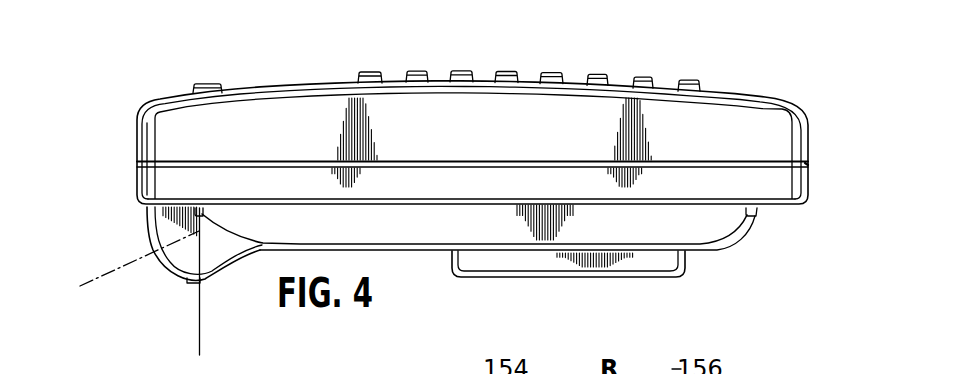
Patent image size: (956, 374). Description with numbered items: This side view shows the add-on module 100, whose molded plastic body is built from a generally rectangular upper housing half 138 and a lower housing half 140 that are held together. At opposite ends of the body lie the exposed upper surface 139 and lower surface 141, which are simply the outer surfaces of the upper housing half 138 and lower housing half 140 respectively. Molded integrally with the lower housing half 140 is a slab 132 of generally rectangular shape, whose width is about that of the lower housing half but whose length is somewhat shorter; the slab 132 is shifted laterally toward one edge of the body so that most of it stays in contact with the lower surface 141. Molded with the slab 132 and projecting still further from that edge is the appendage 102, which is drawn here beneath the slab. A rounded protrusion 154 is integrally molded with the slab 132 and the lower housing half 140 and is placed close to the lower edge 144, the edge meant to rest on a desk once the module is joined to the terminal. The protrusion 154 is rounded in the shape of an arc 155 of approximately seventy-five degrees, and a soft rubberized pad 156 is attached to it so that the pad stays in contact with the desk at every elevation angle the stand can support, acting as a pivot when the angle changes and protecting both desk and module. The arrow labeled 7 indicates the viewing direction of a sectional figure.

The add-on module 100 is at (481, 62).
The section line for FIG. 7 is at (816, 147).
The upper housing half 138 is at (190, 115).
The upper surface 139 is at (283, 79).
The lower edge 144 is at (134, 164).
The lower housing half 140 is at (410, 183).
The appendage 102 is at (622, 263).
The slab 132 is at (720, 231).
The lower surface 141 is at (772, 221).
The rounded protrusion 154 is at (157, 225).
The arc 155 is at (194, 343).
The rubberized pad 156 is at (185, 284).